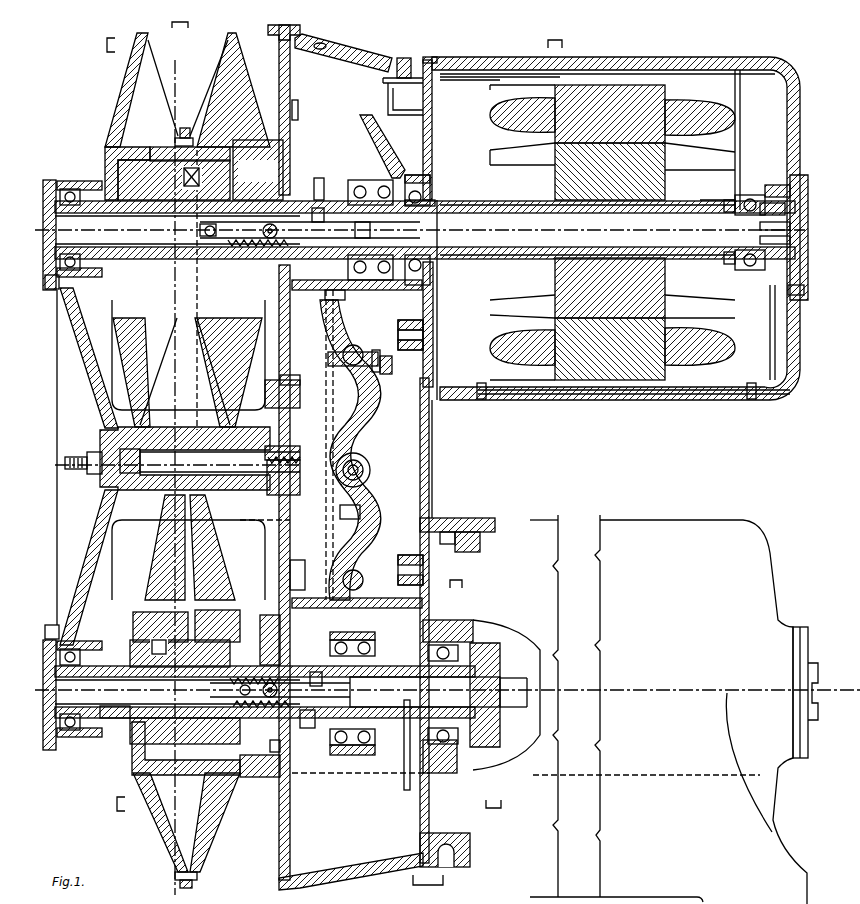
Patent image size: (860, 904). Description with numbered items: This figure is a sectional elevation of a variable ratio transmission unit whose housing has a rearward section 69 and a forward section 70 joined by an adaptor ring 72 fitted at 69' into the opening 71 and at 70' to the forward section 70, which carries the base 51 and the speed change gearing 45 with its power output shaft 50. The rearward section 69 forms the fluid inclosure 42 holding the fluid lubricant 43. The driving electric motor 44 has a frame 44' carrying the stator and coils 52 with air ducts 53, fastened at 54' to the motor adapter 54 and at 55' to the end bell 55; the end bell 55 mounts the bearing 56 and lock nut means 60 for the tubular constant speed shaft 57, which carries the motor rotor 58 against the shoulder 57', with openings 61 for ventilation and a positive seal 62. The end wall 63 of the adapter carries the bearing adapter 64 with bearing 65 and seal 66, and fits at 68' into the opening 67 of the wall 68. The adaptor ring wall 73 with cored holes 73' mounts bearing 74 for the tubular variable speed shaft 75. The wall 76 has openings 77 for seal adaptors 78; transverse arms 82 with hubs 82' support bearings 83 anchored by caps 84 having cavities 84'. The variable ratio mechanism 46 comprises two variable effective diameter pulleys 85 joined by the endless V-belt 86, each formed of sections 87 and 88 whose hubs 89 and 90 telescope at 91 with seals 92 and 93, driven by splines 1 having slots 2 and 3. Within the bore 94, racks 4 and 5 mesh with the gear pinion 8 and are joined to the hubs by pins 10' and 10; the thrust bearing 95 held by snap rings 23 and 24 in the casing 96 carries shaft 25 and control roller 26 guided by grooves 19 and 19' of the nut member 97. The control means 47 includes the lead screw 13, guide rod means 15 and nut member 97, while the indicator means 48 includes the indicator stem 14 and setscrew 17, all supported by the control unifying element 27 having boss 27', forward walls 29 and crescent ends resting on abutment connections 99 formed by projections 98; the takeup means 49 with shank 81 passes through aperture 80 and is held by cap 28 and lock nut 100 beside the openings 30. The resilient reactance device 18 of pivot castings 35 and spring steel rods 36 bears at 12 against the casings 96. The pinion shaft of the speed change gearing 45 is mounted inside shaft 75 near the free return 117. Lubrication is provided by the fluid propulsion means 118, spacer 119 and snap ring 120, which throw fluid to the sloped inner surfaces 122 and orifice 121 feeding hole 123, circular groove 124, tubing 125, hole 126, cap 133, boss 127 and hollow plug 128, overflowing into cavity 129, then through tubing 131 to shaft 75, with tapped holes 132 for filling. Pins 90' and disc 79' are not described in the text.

The drive means 1 is at (150, 210).
The first pair of slots 2 is at (294, 14).
The second pair of slots 3 is at (276, 104).
The first rack 4 is at (205, 232).
The second rack 5 is at (300, 270).
The gear pinion 8 is at (262, 624).
The transverse pin 10 is at (305, 420).
The transverse pin 10' is at (218, 496).
The sprung position 12 is at (372, 228).
The lead screw 13 is at (372, 432).
The indicator stem 14 is at (328, 360).
The guide rod means 15 is at (366, 420).
The setscrew 17 is at (392, 366).
The resilient reactance device 18 is at (268, 500).
The inclined curved groove 19 is at (430, 351).
The inclined curved groove 19' is at (397, 557).
The snap ring 23 is at (374, 649).
The snap ring 24 is at (368, 636).
The shaft 25 is at (424, 332).
The control roller 26 is at (424, 340).
The control unifying element 27 is at (282, 400).
The boss 27' is at (282, 443).
The cap 28 is at (105, 430).
The forward wall 29 is at (362, 513).
The opening 30 is at (372, 470).
The pivot casting 35 is at (290, 578).
The spring steel rod 36 is at (330, 290).
The fluid inclosure 42 is at (428, 887).
The fluid lubricant 43 is at (384, 773).
The driving electric motor 44 is at (555, 35).
The motor frame 44' is at (607, 57).
The speed change gearing 45 is at (493, 809).
The variable ratio mechanism 46 is at (181, 17).
The control means 47 is at (322, 782).
The indicator means 48 is at (387, 375).
The takeup means 49 is at (64, 455).
The power output shaft 50 is at (815, 665).
The base 51 is at (756, 900).
The stator and coils 52 is at (665, 103).
The air ducts 53 is at (553, 79).
The motor adapter 54 is at (500, 58).
The fastening location 54' is at (478, 59).
The end bell 55 is at (613, 228).
The fastening location 55' is at (727, 124).
The bearing 56 is at (750, 195).
The tubular constant speed shaft 57 is at (587, 218).
The shoulder 57' is at (630, 191).
The motor rotor 58 is at (553, 271).
The lock nut means 60 is at (790, 206).
The openings 61 is at (478, 400).
The positive seal 62 is at (728, 200).
The end wall 63 is at (432, 115).
The bearing adapter 64 is at (430, 185).
The bearing 65 is at (428, 192).
The positive seal 66 is at (436, 203).
The opening 67 is at (388, 86).
The wall 68 is at (437, 531).
The fluid tight fit 68' is at (436, 50).
The rearward section 69 is at (351, 872).
The fitted joint 69' is at (444, 459).
The forward section 70 is at (462, 510).
The fitted joint 70' is at (472, 518).
The opening 71 is at (420, 840).
The adaptor ring 72 is at (446, 532).
The wall 73 is at (437, 569).
The cored holes 73' is at (443, 807).
The bearing 74 is at (446, 766).
The tubular variable speed shaft 75 is at (112, 716).
The wall 76 is at (279, 46).
The openings 77 is at (290, 118).
The seal adaptor 78 is at (292, 150).
The conical disc 79' is at (188, 450).
The aperture 80 is at (210, 452).
The shank 81 is at (162, 452).
The transverse arms 82 is at (89, 466).
The hub 82' is at (78, 457).
The bearings 83 is at (72, 190).
The cap 84 is at (51, 443).
The cavity 84' is at (61, 457).
The variable effective diameter pulley 85 is at (105, 424).
The endless V-belt 86 is at (185, 128).
The pulley section 87 is at (133, 75).
The pulley section 88 is at (238, 88).
The hub 89 is at (107, 150).
The hub 90 is at (316, 172).
The pin 90' is at (267, 747).
The telescopic engagement 91 is at (195, 178).
The positive seal 92 is at (184, 180).
The seal 93 is at (262, 757).
The bore 94 is at (112, 216).
The thrust bearing 95 is at (374, 180).
The casing 96 is at (362, 118).
The nut member 97 is at (368, 490).
The projection 98 is at (322, 350).
The abutment connections 99 is at (280, 380).
The lock nut 100 is at (122, 472).
The free return 117 is at (436, 738).
The fluid propulsion means 118 is at (406, 790).
The spacer 119 is at (436, 652).
The snap ring 120 is at (468, 640).
The orifice 121 is at (380, 115).
The inner surfaces 122 is at (330, 44).
The hole 123 is at (432, 130).
The circular groove 124 is at (430, 282).
The tubing 125 is at (522, 390).
The hole 126 is at (785, 329).
The boss 127 is at (760, 226).
The hollow plug 128 is at (760, 240).
The cavity 129 is at (796, 176).
The tubing 131 is at (66, 395).
The tapped holes 132 is at (402, 58).
The cap 133 is at (804, 294).